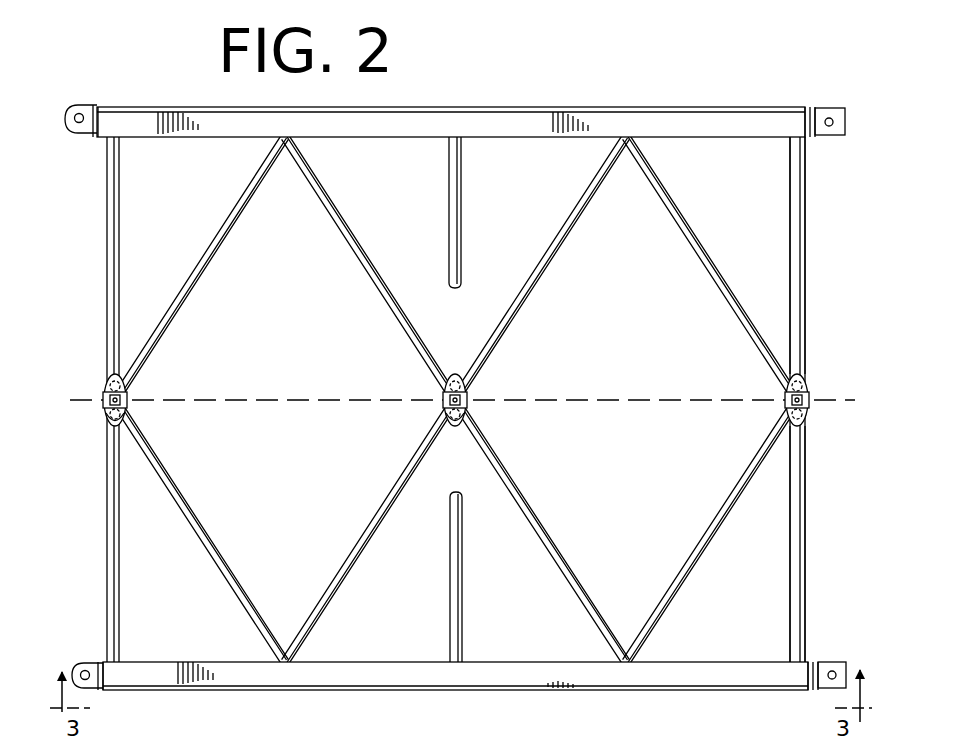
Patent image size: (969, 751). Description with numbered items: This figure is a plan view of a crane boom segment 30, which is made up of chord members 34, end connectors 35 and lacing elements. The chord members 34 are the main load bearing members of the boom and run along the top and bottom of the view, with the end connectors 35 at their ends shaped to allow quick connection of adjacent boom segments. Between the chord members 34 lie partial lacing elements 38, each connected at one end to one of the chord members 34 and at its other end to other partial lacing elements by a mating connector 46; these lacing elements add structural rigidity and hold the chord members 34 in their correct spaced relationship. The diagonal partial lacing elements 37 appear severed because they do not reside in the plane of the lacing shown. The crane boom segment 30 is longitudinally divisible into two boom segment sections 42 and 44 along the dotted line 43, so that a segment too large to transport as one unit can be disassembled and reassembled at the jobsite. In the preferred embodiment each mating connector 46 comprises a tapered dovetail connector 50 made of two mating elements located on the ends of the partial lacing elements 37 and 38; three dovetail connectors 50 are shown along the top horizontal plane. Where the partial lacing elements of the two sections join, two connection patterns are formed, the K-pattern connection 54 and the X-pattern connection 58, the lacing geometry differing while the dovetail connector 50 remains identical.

The crane boom segment 30 is at (499, 74).
The chord member 34 is at (712, 110).
The end connector 35 is at (90, 104).
The diagonal partial lacing element 37 is at (461, 224).
The partial lacing element 38 is at (119, 246).
The boom segment section 42 is at (813, 207).
The dotted line 43 is at (829, 403).
The boom segment section 44 is at (808, 470).
The mating connector 46 is at (106, 391).
The dovetail connector 50 is at (129, 395).
The K-pattern connection 54 is at (108, 416).
The X-pattern connection 58 is at (446, 411).